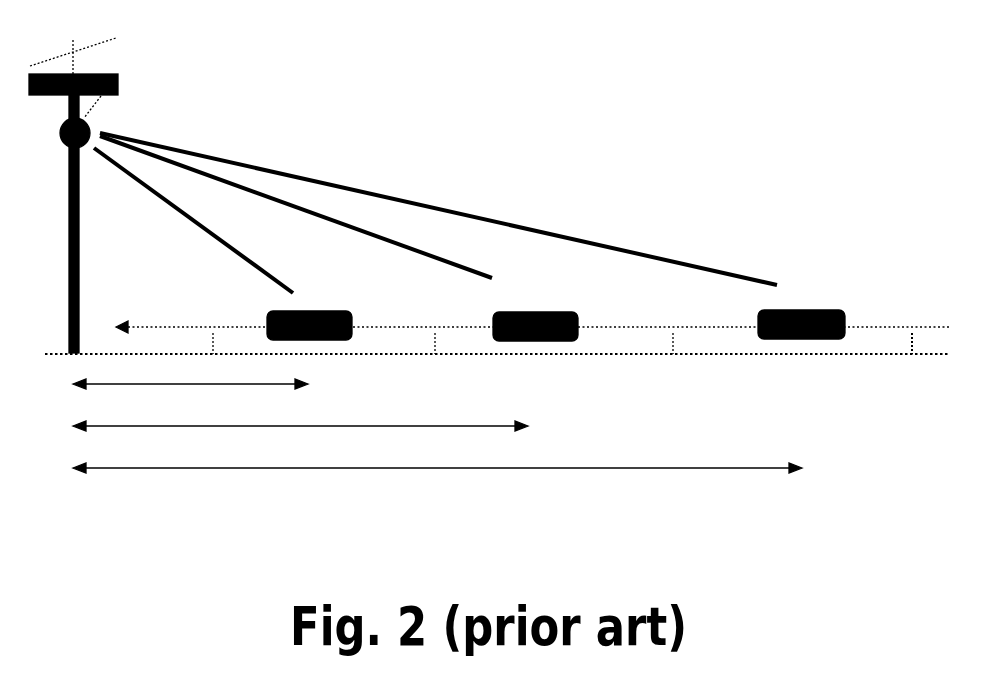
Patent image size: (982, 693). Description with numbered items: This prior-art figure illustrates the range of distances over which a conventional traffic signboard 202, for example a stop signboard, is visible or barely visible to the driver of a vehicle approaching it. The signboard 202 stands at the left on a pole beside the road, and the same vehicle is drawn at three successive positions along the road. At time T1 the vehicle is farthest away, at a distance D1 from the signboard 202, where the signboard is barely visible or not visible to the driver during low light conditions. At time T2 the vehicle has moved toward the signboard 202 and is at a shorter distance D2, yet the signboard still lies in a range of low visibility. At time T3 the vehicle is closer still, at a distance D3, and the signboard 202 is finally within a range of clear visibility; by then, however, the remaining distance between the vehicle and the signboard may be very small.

The traffic signboard 202 is at (403, 195).
The time T1 is at (801, 307).
The time T2 is at (535, 313).
The time T3 is at (309, 312).
The distance D1 is at (437, 458).
The distance D2 is at (300, 415).
The distance D3 is at (190, 376).